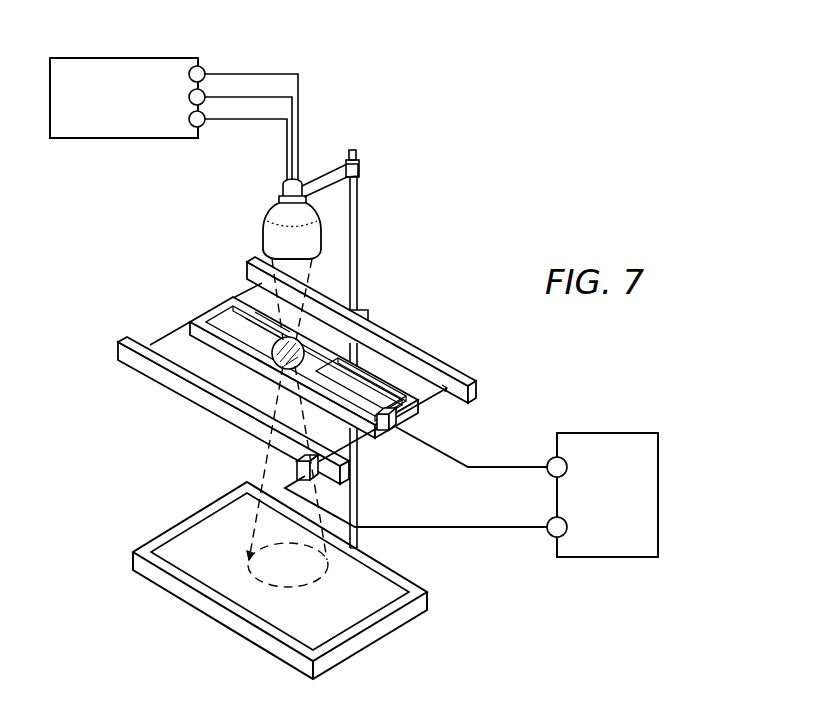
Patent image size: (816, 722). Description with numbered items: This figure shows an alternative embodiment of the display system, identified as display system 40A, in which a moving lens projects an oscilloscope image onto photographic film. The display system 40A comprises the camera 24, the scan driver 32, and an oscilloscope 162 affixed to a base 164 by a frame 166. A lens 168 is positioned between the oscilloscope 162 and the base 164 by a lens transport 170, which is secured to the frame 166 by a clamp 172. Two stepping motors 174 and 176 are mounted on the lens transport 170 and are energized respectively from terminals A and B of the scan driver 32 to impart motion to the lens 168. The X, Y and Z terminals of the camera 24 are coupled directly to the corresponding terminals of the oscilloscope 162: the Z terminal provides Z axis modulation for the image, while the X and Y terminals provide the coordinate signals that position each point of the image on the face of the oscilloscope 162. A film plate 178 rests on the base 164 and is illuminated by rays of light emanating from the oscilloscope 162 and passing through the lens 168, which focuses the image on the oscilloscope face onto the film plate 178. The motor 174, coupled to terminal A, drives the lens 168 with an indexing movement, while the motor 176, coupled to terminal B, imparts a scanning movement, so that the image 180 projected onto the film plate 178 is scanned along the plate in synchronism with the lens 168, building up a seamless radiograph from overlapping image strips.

The camera 24 is at (128, 57).
The scan driver 32 is at (613, 432).
The display system 40A is at (524, 203).
The oscilloscope 162 is at (272, 214).
The base 164 is at (374, 636).
The frame 166 is at (359, 233).
The lens 168 is at (218, 306).
The lens transport 170 is at (430, 368).
The clamp 172 is at (369, 314).
The stepping motor 174 is at (294, 466).
The stepping motor 176 is at (400, 421).
The film plate 178 is at (348, 623).
The image 180 is at (247, 562).